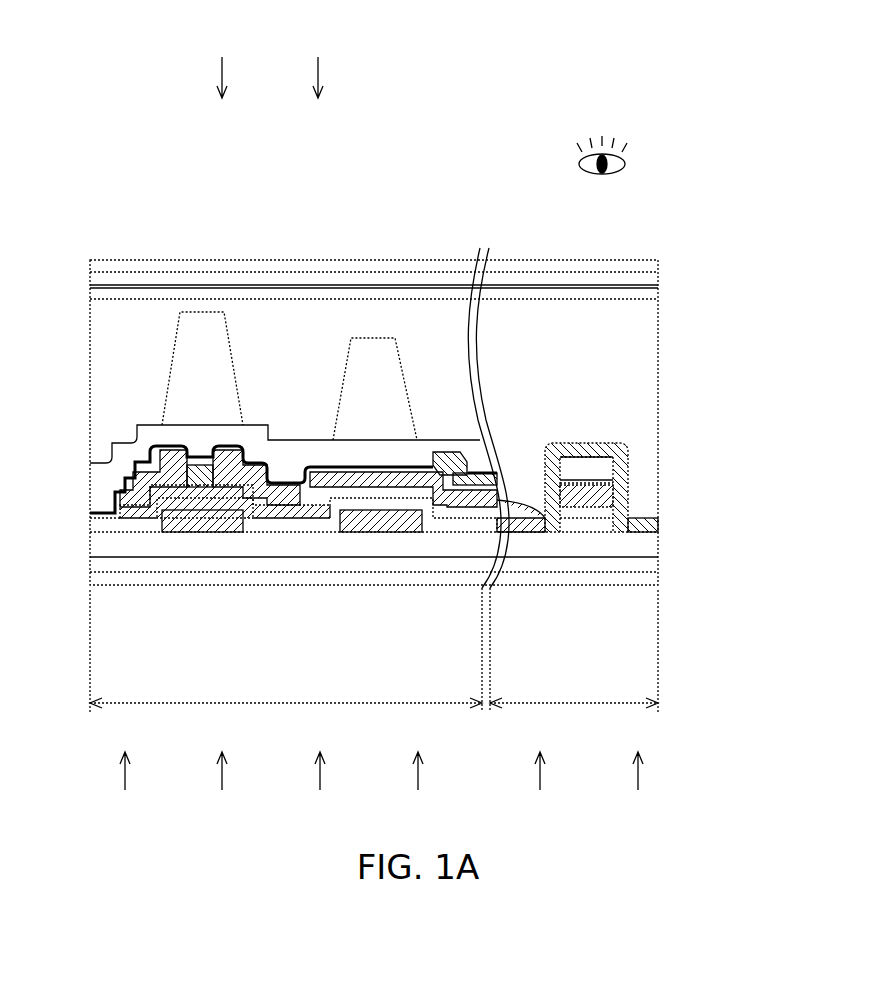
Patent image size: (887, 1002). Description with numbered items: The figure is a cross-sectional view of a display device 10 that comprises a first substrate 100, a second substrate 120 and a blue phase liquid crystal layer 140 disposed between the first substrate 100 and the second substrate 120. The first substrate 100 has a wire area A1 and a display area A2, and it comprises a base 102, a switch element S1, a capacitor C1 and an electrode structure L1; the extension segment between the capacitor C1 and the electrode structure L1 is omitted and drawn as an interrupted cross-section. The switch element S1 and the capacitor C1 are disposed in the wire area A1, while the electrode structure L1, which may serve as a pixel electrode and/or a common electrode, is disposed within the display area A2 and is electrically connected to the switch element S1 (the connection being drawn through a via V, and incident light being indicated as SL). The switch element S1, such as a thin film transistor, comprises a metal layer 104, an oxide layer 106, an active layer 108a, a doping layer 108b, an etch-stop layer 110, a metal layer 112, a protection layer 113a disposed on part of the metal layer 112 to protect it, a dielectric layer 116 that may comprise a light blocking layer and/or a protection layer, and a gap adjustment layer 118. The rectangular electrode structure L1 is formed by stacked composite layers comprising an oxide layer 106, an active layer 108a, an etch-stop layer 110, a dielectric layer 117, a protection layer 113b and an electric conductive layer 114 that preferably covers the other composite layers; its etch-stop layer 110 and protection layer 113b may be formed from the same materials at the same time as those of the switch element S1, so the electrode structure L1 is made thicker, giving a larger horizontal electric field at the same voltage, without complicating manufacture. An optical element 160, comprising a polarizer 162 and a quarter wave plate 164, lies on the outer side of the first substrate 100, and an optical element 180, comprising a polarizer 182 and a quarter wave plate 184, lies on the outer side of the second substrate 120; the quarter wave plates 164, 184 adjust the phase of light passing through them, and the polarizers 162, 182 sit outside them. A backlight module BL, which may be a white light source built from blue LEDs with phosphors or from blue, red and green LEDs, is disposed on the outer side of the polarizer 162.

The display device 10 is at (50, 25).
The first substrate 100 is at (122, 163).
The base 102 is at (108, 548).
The metal layer 104 is at (364, 532).
The oxide layer 106 is at (430, 548).
The active layer 108a is at (468, 512).
The doping layer 108b is at (505, 510).
The etch-stop layer 110 is at (200, 482).
The metal layer 112 is at (528, 523).
The protection layer 113a is at (290, 490).
The protection layer 113b is at (612, 480).
The electric conductive layer 114 is at (455, 455).
The dielectric layer 116 is at (432, 445).
The dielectric layer 117 is at (610, 450).
The gap adjustment layer 118 is at (373, 353).
The second substrate 120 is at (647, 292).
The blue phase liquid crystal layer 140 is at (645, 349).
The optical element 160 is at (726, 542).
The polarizer 162 is at (647, 577).
The quarter wave plate 164 is at (647, 562).
The optical element 180 is at (726, 222).
The polarizer 182 is at (647, 265).
The quarter wave plate 184 is at (647, 280).
The switch element S1 is at (178, 440).
The capacitor C1 is at (330, 377).
The electrode structure L1 is at (583, 433).
The ambient light SL is at (274, 64).
The backlight module BL is at (386, 789).
The via hole V is at (472, 470).
The wire area A1 is at (286, 661).
The display area A2 is at (574, 661).